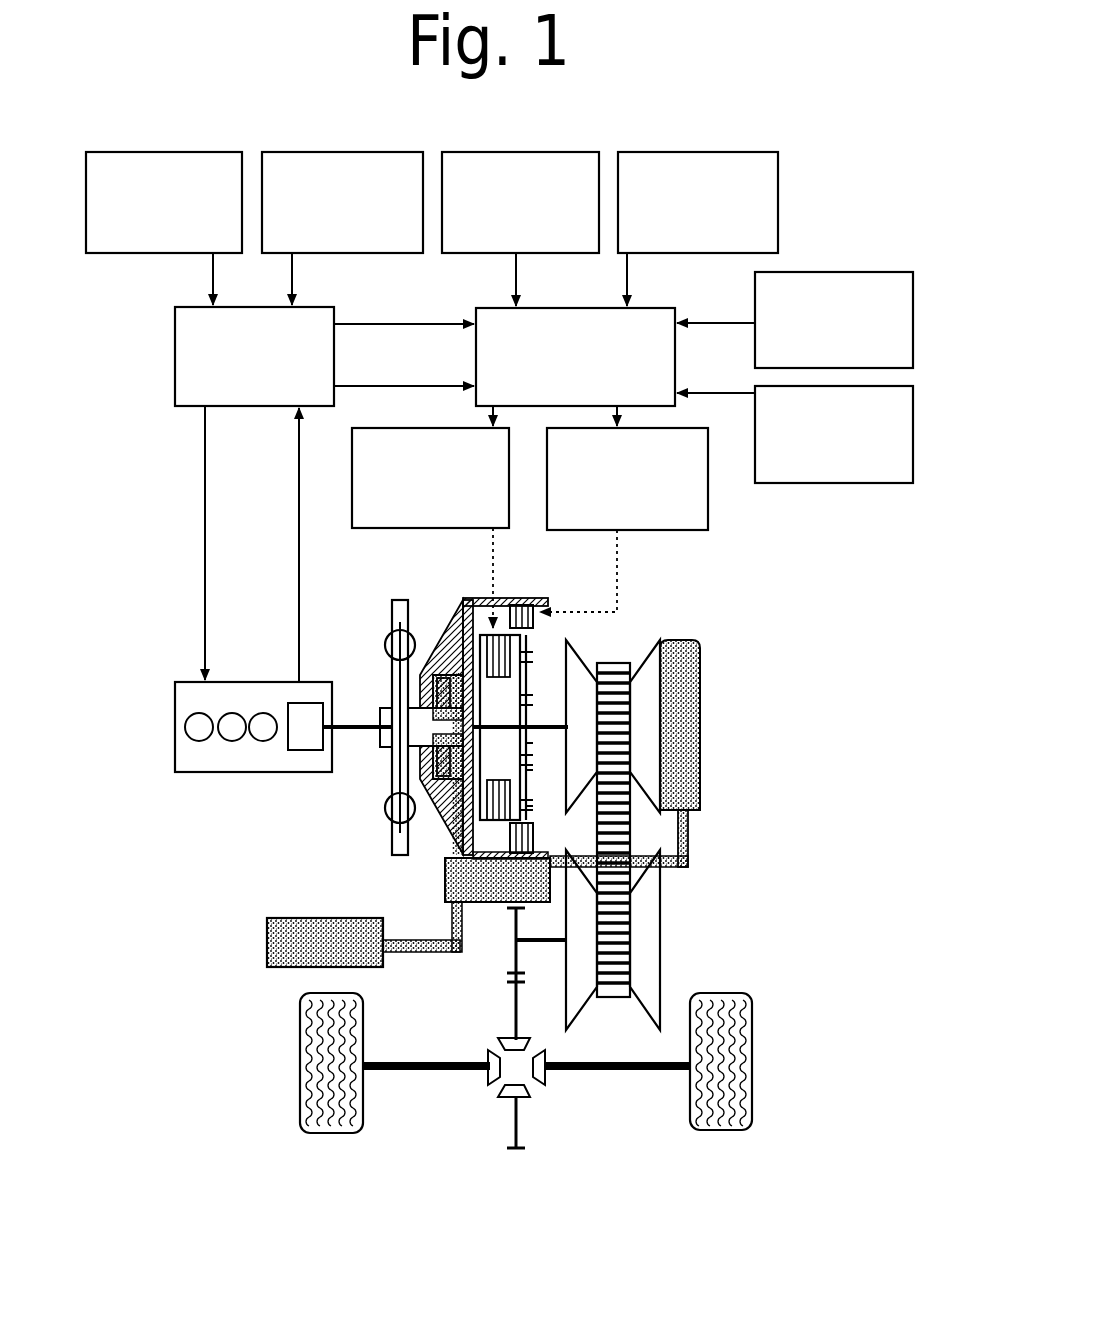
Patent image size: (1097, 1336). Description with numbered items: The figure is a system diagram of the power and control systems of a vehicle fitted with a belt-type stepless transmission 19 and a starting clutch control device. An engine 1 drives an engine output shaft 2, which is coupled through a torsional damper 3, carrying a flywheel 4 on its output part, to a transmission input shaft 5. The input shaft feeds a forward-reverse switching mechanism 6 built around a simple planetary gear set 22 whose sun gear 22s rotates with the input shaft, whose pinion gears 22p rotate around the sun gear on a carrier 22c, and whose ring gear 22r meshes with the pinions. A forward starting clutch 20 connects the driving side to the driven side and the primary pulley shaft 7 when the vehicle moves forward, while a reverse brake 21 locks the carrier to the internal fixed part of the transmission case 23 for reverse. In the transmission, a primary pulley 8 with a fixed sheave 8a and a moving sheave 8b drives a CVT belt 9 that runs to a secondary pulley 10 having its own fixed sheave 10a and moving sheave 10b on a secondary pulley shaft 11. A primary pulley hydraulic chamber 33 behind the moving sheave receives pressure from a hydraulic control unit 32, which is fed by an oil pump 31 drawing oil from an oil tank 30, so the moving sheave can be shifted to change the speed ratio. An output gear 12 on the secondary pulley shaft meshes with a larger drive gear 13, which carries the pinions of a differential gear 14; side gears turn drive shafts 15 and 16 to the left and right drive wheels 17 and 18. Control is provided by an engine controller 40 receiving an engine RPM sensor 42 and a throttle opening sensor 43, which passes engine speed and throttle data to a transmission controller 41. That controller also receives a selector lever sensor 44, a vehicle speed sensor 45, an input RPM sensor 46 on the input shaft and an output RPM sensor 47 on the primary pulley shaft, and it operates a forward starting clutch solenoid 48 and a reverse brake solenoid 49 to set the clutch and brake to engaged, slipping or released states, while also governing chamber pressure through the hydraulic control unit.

The engine 1 is at (190, 682).
The engine output shaft 2 is at (350, 725).
The torsional damper 3 is at (400, 598).
The flywheel 4 is at (448, 625).
The transmission input shaft 5 is at (413, 687).
The forward-reverse switching mechanism 6 is at (521, 599).
The primary pulley shaft 7 is at (537, 725).
The primary pulley 8 is at (623, 692).
The fixed sheave 8a is at (585, 655).
The moving sheave 8b is at (646, 640).
The CVT belt 9 is at (630, 820).
The secondary pulley 10 is at (656, 954).
The fixed sheave 10a is at (645, 1017).
The moving sheave 10b is at (583, 1018).
The secondary pulley shaft 11 is at (543, 947).
The output gear 12 is at (506, 973).
The drive gear 13 is at (508, 1018).
The differential gear 14 is at (494, 1099).
The drive shaft 15 is at (393, 1058).
The drive shaft 16 is at (615, 1072).
The left drive wheel 17 is at (300, 1125).
The right drive wheel 18 is at (745, 1130).
The belt-type stepless transmission 19 is at (722, 739).
The starting clutch 20 is at (495, 680).
The reverse brake 21 is at (536, 621).
The simple planetary gear set 22 is at (534, 688).
The sun gear 22s is at (530, 743).
The pinion gears 22p is at (530, 770).
The ring gear 22r is at (530, 806).
The carrier 22c is at (535, 818).
The transmission case 23 is at (471, 605).
The oil tank 30 is at (295, 918).
The oil pump 31 is at (447, 803).
The hydraulic control unit 32 is at (486, 904).
The primary pulley hydraulic chamber 33 is at (683, 700).
The engine controller 40 is at (183, 307).
The transmission controller 41 is at (675, 308).
The engine RPM sensor 42 is at (86, 165).
The throttle opening sensor 43 is at (323, 152).
The selector lever sensor 44 is at (549, 152).
The vehicle speed sensor 45 is at (779, 180).
The input RPM sensor 46 is at (895, 272).
The output RPM sensor 47 is at (888, 484).
The forward starting clutch solenoid 48 is at (352, 496).
The reverse brake solenoid 49 is at (708, 508).